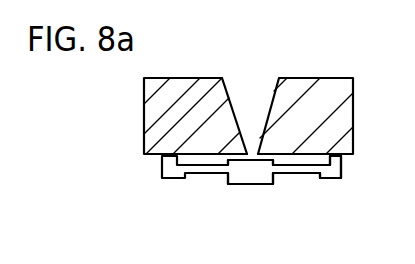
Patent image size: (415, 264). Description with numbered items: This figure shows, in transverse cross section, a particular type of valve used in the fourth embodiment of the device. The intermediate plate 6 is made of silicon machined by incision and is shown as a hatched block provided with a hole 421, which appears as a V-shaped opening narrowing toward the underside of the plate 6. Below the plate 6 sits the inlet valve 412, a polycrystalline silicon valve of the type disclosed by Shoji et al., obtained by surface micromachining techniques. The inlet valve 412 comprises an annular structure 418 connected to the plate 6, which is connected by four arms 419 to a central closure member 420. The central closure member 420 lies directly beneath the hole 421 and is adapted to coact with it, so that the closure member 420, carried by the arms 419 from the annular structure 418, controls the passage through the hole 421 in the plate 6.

The intermediate plate 6 is at (330, 102).
The hole 421 is at (248, 153).
The inlet valve 412 is at (209, 181).
The central closure member 420 is at (244, 183).
The arm 419 is at (303, 174).
The annular structure 418 is at (328, 179).